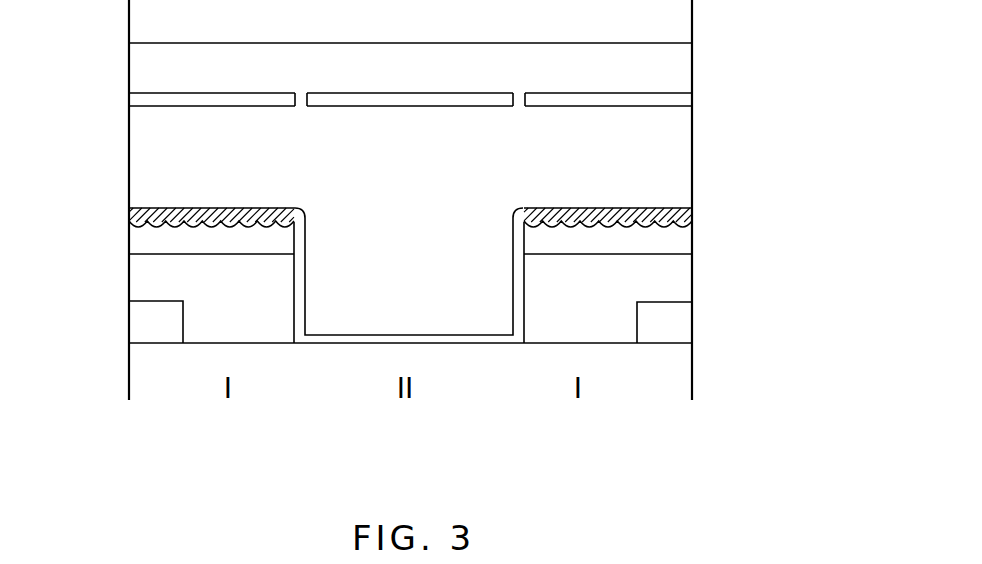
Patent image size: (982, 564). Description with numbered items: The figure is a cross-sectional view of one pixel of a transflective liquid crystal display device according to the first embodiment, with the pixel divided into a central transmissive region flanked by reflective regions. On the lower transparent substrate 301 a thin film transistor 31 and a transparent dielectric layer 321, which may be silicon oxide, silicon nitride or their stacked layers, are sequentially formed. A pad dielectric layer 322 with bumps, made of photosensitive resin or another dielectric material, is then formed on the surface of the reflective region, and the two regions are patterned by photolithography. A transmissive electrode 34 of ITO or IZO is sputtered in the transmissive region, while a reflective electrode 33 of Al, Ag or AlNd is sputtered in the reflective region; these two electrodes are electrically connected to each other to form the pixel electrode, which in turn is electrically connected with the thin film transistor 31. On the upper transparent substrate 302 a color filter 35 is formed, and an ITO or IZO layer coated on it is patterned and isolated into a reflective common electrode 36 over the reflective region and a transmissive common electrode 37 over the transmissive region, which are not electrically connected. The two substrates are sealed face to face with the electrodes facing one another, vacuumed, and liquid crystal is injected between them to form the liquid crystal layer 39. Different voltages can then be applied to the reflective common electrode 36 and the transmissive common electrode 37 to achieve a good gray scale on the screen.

The transparent substrate 301 is at (411, 371).
The transparent substrate 302 is at (410, 21).
The thin film transistor 31 is at (662, 322).
The transparent dielectric layer 321 is at (670, 277).
The pad dielectric layer 322 is at (672, 240).
The reflective electrode 33 is at (673, 213).
The transmissive electrode 34 is at (517, 252).
The color filter 35 is at (673, 67).
The reflective common electrode 36 is at (668, 100).
The transmissive common electrode 37 is at (393, 100).
The liquid crystal layer 39 is at (672, 160).